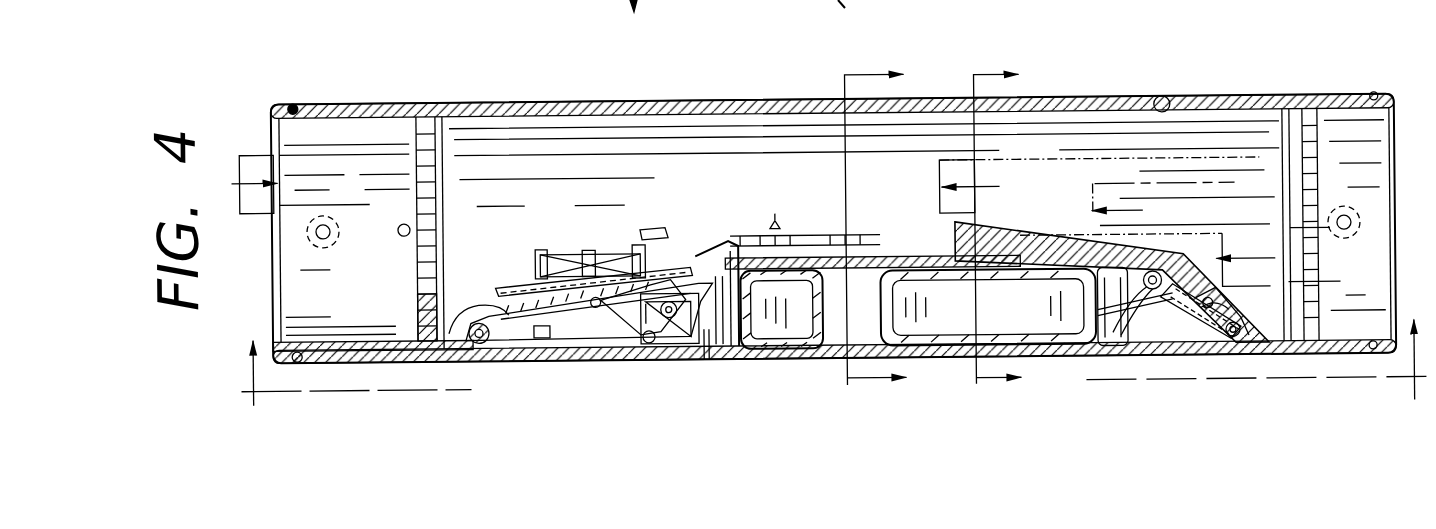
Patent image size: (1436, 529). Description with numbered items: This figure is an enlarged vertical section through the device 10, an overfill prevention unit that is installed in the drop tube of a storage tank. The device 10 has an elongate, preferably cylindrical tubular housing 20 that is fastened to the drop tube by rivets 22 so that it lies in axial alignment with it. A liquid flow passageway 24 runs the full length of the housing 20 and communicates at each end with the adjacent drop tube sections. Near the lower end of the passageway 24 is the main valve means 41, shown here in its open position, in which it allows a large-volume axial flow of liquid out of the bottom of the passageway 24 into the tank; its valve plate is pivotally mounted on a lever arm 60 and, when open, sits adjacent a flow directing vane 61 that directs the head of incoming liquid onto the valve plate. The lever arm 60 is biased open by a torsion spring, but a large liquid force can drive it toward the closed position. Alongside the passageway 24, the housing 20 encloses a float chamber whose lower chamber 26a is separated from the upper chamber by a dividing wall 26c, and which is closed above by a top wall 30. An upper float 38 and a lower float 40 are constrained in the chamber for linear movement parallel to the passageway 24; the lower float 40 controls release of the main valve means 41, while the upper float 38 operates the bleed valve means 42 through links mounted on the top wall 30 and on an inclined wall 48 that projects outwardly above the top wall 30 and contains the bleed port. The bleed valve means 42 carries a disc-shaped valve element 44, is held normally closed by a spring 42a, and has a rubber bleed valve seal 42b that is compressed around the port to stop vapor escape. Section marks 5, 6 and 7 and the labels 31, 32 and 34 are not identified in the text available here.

The device 10 is at (1316, 66).
The tubular housing 20 is at (458, 99).
The side wall projection 31 is at (262, 205).
The section line 5 is at (835, 376).
The section line 6 is at (853, 230).
The section line 7 is at (975, 76).
The lever arm 60 is at (560, 353).
The liquid flow passageway 24 is at (632, 356).
The rivets 22 is at (688, 348).
The disc-shaped valve element 44 is at (710, 350).
The carrier plate 34 is at (560, 260).
The upper float 38 is at (500, 288).
The main valve means 41 is at (648, 226).
The flow directing vane 61 is at (700, 240).
The lower float 40 is at (790, 330).
The lower chamber 26a is at (828, 248).
The dividing wall 26c is at (895, 260).
The phantom position 32 is at (948, 228).
The top wall 30 is at (1140, 352).
The spring 42a is at (1112, 348).
The bleed valve means 42 is at (1207, 348).
The bleed valve seal 42b is at (1218, 350).
The inclined wall 48 is at (1250, 350).